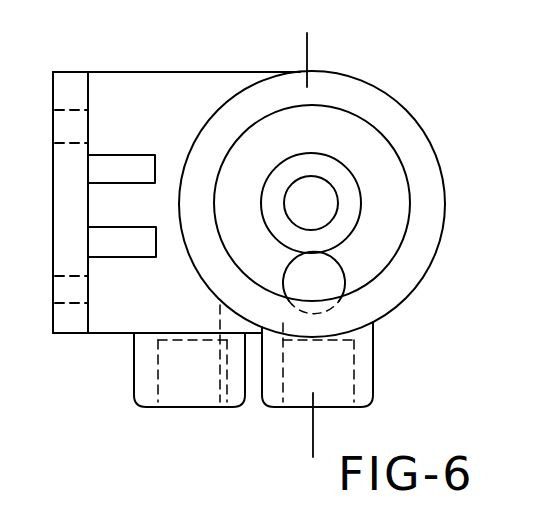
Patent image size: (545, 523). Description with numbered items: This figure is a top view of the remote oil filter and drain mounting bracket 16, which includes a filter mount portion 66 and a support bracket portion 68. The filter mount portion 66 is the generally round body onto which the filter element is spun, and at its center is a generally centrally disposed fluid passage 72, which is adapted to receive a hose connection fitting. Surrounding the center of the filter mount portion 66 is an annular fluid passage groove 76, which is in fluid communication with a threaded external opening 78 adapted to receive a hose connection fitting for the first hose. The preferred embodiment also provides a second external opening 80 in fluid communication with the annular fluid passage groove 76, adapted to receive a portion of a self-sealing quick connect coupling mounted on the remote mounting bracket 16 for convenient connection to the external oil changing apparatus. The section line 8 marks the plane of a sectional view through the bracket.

The remote oil filter and drain mounting bracket 16 is at (126, 362).
The filter mount portion 66 is at (372, 86).
The support bracket portion 68 is at (158, 40).
The fluid passage 72 is at (326, 192).
The annular fluid passage groove 76 is at (392, 218).
The threaded external opening 78 is at (332, 265).
The second external opening 80 is at (345, 365).
The section line 8- 8 is at (323, 50).